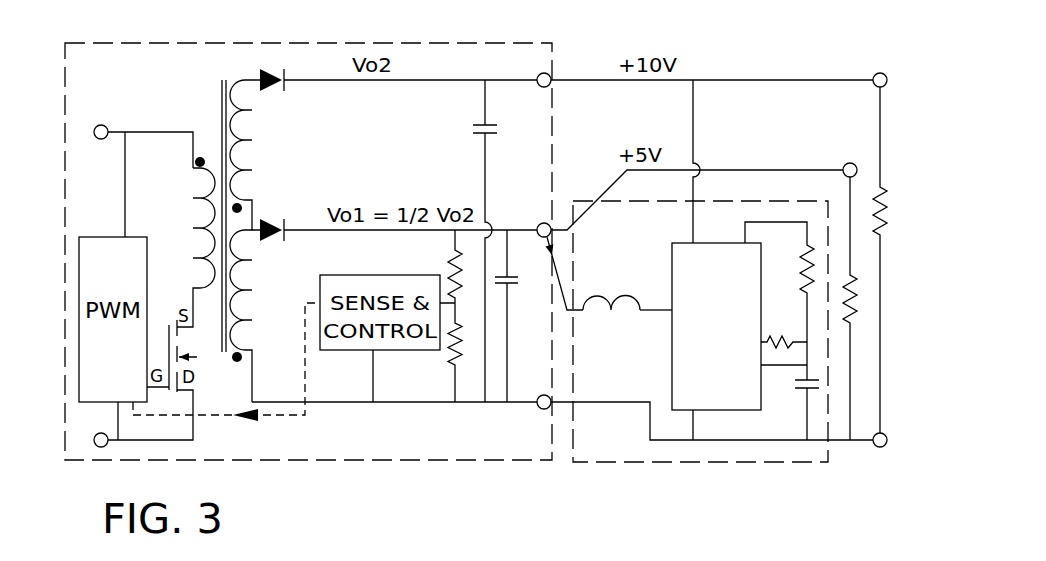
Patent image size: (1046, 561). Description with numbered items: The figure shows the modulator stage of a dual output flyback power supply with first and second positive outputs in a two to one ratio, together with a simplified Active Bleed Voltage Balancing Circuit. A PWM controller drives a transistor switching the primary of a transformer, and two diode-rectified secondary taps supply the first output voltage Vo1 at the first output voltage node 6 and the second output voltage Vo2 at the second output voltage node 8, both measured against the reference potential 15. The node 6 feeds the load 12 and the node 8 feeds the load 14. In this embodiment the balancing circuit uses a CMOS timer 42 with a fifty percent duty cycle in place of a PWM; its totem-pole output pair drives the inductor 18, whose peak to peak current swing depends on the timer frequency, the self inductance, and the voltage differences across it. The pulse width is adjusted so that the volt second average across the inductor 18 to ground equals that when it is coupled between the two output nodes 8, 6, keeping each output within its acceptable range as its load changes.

The first output voltage node 6 is at (850, 163).
The second output voltage node 8 is at (875, 73).
The load 12 is at (869, 274).
The load 14 is at (892, 260).
The reference potential 15 is at (540, 410).
The inductor 18 is at (605, 285).
The CMOS 555 timer 42 is at (732, 358).